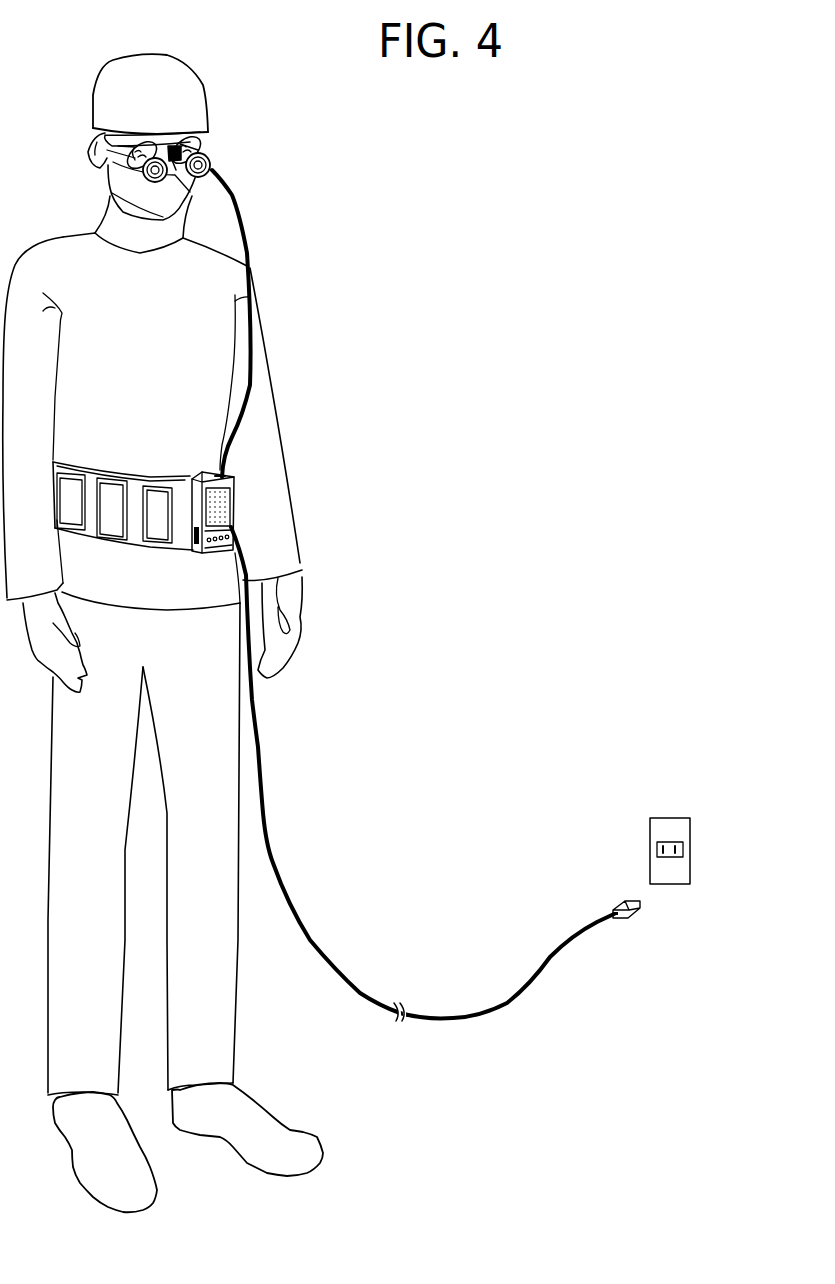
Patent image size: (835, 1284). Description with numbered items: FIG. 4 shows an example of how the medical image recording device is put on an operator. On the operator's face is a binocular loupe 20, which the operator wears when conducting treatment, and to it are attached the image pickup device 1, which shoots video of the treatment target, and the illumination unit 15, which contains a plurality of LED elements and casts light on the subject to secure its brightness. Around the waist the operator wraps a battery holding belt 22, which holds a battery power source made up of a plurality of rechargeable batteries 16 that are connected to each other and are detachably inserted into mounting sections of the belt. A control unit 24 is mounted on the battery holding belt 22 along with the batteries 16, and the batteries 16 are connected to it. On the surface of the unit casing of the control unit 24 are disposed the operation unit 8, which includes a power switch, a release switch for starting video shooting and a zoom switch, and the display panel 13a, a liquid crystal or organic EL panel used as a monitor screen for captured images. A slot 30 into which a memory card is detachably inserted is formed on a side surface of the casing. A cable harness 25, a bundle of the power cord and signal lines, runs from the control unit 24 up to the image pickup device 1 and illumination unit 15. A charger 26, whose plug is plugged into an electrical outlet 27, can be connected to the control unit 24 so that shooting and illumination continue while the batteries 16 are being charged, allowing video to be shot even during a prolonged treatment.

The image pickup device 1 is at (207, 150).
The binocular loupe 20 is at (200, 133).
The illumination unit 15 is at (173, 167).
The cable harness 25 is at (250, 255).
The battery holding belt 22 is at (88, 550).
The batteries 16 is at (157, 483).
The control unit 24 is at (218, 473).
The display panel 13a is at (225, 500).
The operation unit 8 is at (208, 552).
The slot 30 is at (196, 540).
The charger 26 is at (620, 905).
The electrical outlet 27 is at (663, 817).